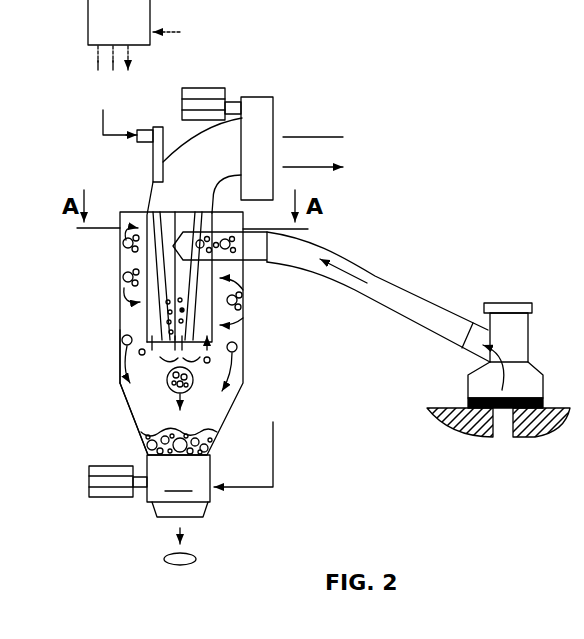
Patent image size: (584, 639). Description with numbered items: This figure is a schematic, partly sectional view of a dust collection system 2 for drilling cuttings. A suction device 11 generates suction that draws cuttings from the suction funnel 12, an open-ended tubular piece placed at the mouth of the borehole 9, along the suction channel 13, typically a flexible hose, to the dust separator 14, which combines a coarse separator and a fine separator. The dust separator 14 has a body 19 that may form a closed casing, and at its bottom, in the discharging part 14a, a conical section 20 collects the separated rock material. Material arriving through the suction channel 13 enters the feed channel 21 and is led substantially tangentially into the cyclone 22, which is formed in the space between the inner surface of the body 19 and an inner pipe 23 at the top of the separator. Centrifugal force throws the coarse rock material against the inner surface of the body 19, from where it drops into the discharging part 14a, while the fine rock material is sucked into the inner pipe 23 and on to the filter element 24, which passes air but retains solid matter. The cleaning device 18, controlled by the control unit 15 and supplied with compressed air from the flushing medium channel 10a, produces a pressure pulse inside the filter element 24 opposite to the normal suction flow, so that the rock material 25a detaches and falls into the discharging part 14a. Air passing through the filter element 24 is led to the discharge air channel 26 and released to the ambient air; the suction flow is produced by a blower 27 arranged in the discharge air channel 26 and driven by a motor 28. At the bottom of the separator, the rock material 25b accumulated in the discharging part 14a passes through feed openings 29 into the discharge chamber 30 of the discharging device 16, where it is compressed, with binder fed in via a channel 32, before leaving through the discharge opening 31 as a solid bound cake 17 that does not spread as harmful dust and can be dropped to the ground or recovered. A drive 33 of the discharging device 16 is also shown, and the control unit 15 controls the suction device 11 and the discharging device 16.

The apparatus 2 is at (574, 245).
The borehole 9 is at (504, 438).
The sensor 10a is at (102, 126).
The suction device 11 is at (272, 50).
The suction funnel 12 is at (512, 345).
The suction channel 13 is at (387, 288).
The dust separator 14 is at (105, 325).
The discharging part 14a is at (240, 405).
The control unit 15 is at (132, 27).
The discharging device 16 is at (136, 508).
The cake 17 is at (188, 562).
The cleaning device 18 is at (158, 148).
The body 19 is at (118, 364).
The conical section 20 is at (127, 402).
The feed channel 21 is at (303, 240).
The cyclone 22 is at (247, 322).
The inner pipe 23 is at (247, 285).
The filter element 24 is at (192, 247).
The rock material 25a is at (192, 398).
The rock material 25b is at (213, 438).
The discharge air channel 26 is at (208, 162).
The blower 27 is at (258, 118).
The motor 28 is at (202, 89).
The feed opening 29 is at (150, 442).
The discharge chamber 30 is at (178, 478).
The discharge opening 31 is at (198, 518).
The channel 32 is at (273, 477).
The drive 33 is at (100, 477).